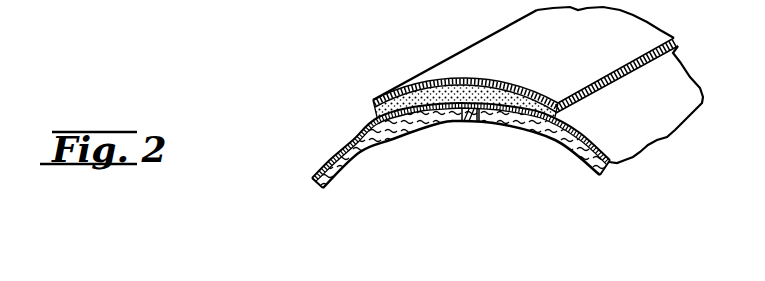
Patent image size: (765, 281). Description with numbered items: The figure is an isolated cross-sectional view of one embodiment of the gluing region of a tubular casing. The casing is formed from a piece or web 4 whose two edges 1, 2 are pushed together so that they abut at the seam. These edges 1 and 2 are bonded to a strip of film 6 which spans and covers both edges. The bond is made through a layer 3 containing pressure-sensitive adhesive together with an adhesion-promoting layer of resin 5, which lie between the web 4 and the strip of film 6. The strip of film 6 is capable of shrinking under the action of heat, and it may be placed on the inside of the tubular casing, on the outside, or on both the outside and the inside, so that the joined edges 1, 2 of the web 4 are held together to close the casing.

The edge 1 is at (465, 115).
The edge 2 is at (468, 118).
The layer containing pressure-sensitive adhesive 3 is at (470, 99).
The piece or web 4 is at (388, 138).
The adhesion-promoting layer of resin 5 is at (326, 161).
The strip of film 6 is at (534, 89).